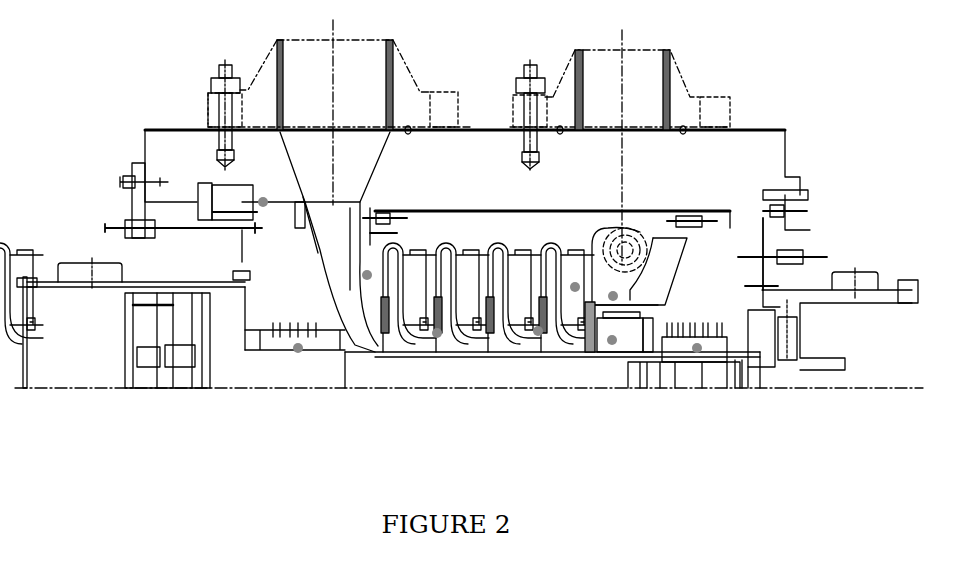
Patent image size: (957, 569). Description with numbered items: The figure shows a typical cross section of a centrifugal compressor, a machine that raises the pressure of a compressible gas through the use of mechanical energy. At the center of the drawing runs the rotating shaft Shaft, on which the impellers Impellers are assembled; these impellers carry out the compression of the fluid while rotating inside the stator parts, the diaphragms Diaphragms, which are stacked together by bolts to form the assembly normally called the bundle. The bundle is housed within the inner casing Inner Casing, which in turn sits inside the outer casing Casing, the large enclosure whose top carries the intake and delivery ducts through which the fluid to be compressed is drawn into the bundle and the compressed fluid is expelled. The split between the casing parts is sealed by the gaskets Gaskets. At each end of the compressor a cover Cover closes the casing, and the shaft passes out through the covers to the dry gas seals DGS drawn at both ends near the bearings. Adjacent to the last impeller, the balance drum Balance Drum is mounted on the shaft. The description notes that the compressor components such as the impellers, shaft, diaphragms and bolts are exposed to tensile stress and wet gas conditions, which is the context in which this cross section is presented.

The casing Casing is at (466, 186).
The gaskets Gaskets is at (259, 199).
The inner casing Inner Casing is at (540, 256).
The diaphragms Diaphragms is at (616, 293).
The impellers Impellers is at (537, 336).
The shaft Shaft is at (469, 370).
The cover Cover is at (467, 292).
The balance drum Balance Drum is at (616, 345).
The element DGS is at (295, 353).